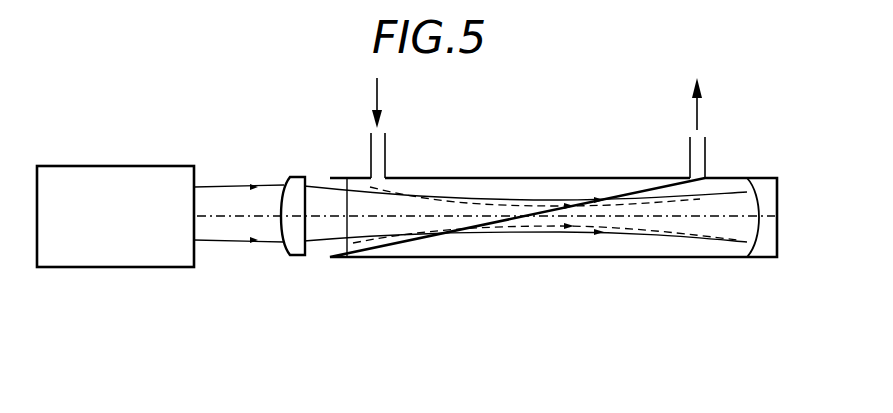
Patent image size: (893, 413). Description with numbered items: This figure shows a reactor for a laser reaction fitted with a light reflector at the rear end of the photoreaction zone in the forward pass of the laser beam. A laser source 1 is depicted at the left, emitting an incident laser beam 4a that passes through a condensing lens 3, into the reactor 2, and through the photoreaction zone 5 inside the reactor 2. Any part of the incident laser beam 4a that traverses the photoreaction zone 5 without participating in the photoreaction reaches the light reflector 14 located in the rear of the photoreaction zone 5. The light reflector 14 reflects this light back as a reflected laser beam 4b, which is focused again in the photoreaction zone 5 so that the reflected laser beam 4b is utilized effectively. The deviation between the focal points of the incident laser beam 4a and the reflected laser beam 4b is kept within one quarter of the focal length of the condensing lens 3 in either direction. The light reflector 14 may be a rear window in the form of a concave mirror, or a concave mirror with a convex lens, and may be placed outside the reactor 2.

The laser oscillator 1 is at (83, 268).
The reactor 2 is at (635, 258).
The condensing lens 3 is at (290, 177).
The incident laser beam 4a is at (232, 240).
The reflected laser beam 4b is at (508, 226).
The photoreaction zone 5 is at (553, 197).
The light reflector 14 is at (760, 178).